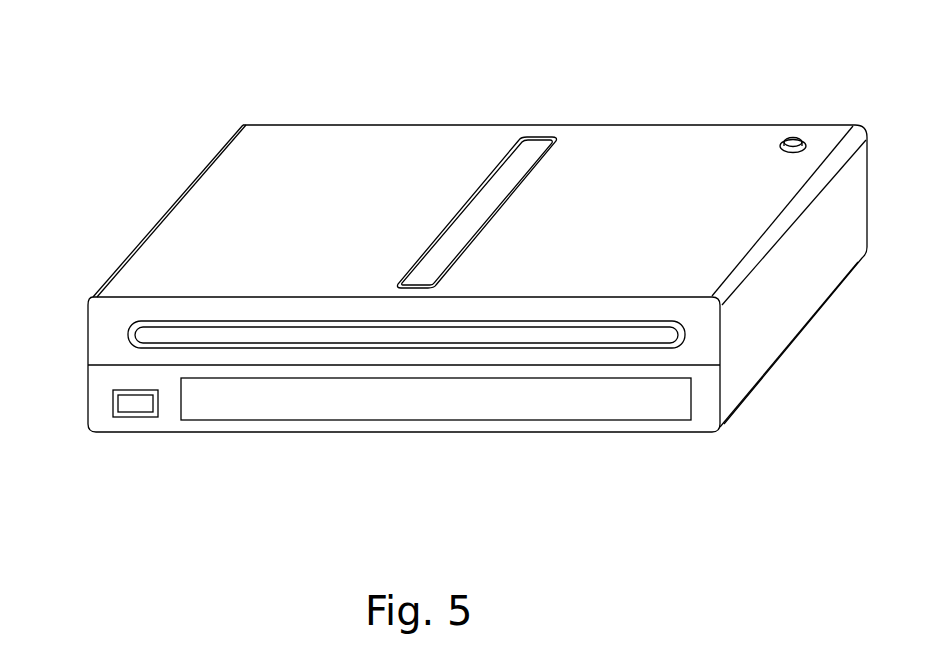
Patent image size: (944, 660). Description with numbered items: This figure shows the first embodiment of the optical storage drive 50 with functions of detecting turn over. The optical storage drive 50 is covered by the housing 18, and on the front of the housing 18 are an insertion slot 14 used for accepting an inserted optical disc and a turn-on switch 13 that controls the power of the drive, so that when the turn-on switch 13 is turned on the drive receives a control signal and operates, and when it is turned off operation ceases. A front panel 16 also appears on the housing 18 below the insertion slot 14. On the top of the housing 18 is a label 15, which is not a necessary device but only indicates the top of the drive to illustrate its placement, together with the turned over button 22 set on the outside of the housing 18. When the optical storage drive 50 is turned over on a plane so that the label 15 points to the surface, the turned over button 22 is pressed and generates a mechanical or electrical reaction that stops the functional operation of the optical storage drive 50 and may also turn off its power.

The optical storage drive 50 is at (272, 58).
The housing 18 is at (175, 242).
The label 15 is at (533, 150).
The turned over button 22 is at (795, 138).
The insertion slot 14 is at (138, 335).
The front panel / display window 16 is at (498, 403).
The turn-on switch 13 is at (138, 403).